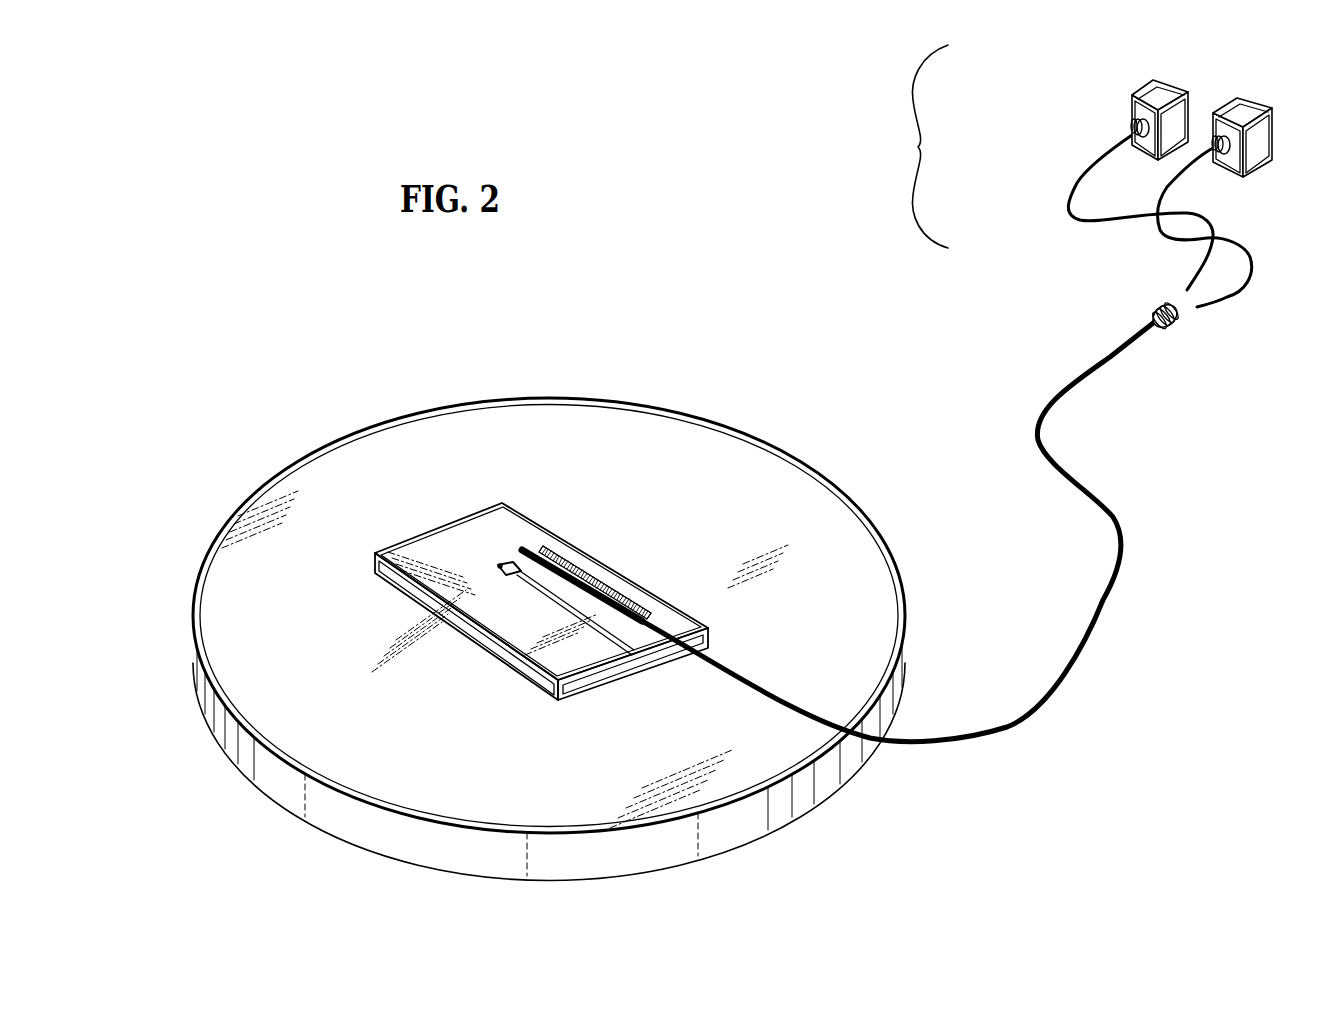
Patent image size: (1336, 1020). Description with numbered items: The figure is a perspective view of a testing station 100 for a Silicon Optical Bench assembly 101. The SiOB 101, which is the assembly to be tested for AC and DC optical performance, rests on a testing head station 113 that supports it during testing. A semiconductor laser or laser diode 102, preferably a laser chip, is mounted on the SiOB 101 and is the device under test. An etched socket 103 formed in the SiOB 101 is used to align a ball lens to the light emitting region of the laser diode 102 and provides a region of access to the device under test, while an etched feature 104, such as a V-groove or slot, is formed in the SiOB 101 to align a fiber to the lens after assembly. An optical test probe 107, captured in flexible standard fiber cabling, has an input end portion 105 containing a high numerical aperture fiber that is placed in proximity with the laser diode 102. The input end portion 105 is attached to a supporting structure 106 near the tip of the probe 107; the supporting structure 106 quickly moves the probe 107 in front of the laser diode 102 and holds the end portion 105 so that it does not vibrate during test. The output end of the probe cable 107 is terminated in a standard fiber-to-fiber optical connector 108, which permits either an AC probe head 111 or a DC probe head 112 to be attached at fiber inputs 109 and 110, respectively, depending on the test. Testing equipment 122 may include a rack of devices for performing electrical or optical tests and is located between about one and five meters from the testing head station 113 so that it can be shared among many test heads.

The testing station 100 is at (291, 357).
The Silicon Optical Bench (SiOB) assembly 101 is at (428, 547).
The semiconductor laser (laser diode) 102 is at (507, 555).
The etched socket 103 is at (508, 583).
The etched feature (V-groove or slot) 104 is at (632, 657).
The input end portion 105 is at (532, 543).
The supporting structure 106 is at (593, 575).
The optical test probe (OTP) 107 is at (963, 732).
The optical connector 108 is at (1148, 308).
The fiber input 109 is at (1062, 189).
The fiber input 110 is at (1163, 187).
The AC probe head 111 is at (1157, 93).
The DC probe head 112 is at (1240, 108).
The testing head station 113 is at (327, 495).
The testing equipment 122 is at (914, 146).